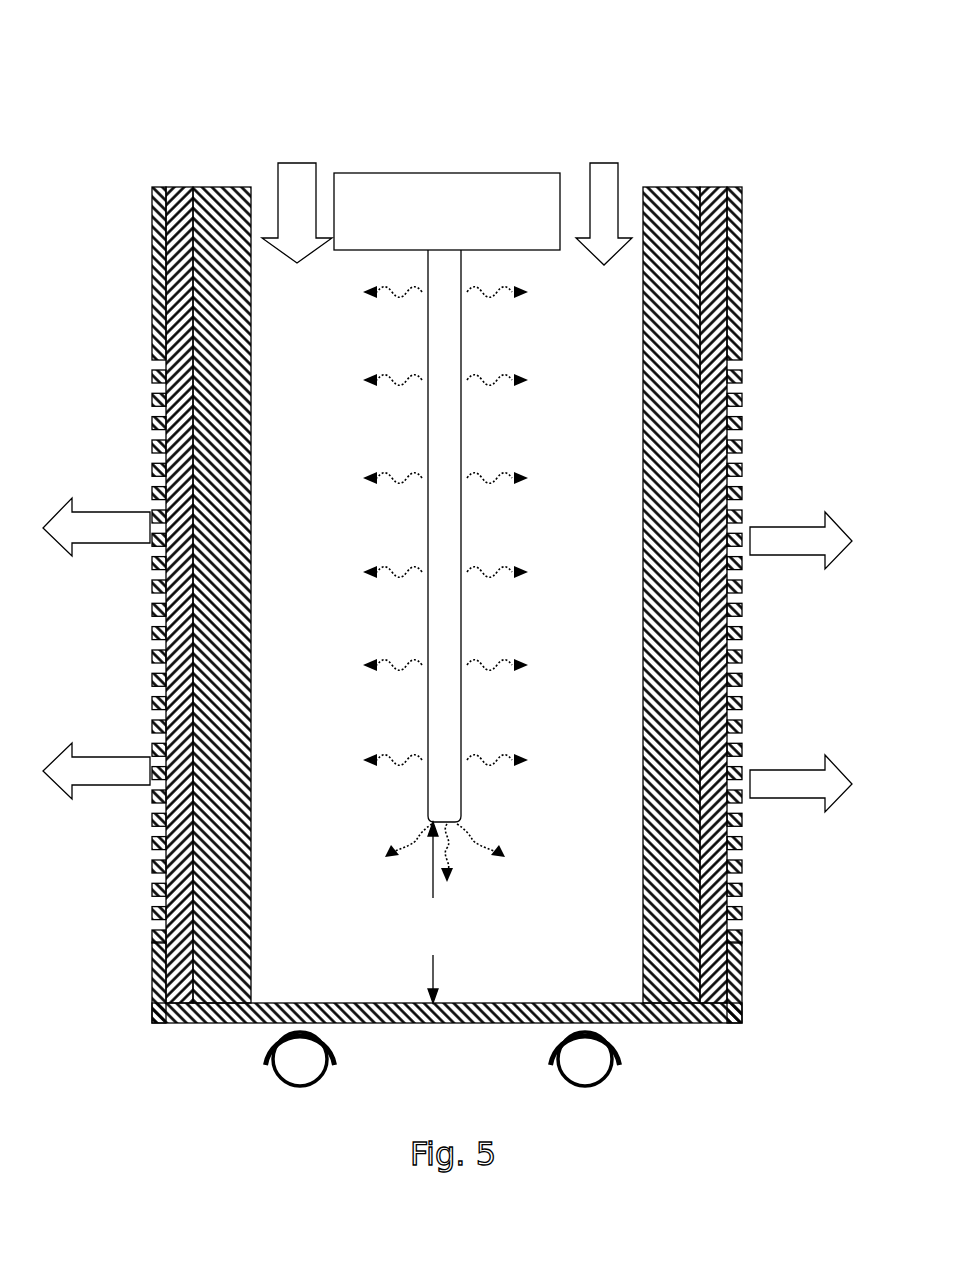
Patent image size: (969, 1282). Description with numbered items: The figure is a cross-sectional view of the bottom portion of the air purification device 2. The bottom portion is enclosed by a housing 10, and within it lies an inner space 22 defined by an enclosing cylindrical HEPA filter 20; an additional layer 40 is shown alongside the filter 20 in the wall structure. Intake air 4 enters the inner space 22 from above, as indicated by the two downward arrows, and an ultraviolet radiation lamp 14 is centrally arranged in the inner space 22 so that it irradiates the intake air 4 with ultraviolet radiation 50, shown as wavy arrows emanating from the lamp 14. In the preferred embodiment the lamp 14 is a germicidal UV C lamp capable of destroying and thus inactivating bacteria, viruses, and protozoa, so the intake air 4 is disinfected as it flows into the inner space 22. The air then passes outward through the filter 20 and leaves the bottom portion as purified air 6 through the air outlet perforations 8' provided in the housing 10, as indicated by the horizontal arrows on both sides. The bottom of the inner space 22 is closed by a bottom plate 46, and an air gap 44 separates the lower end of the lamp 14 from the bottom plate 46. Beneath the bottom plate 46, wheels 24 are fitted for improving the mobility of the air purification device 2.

The purification device 2 is at (174, 104).
The intake air 4 is at (602, 160).
The purified air 6 is at (782, 768).
The air outlet perforation 8' is at (780, 637).
The housing 10 is at (742, 268).
The ultraviolet radiation lamp 14 is at (461, 320).
The filter 20 is at (251, 628).
The inner space 22 is at (503, 957).
The wheel 24 is at (268, 1060).
The additional layer 40 is at (153, 668).
The air gap 44 is at (430, 912).
The bottom plate 46 is at (300, 1003).
The ultraviolet radiation 50 is at (495, 385).